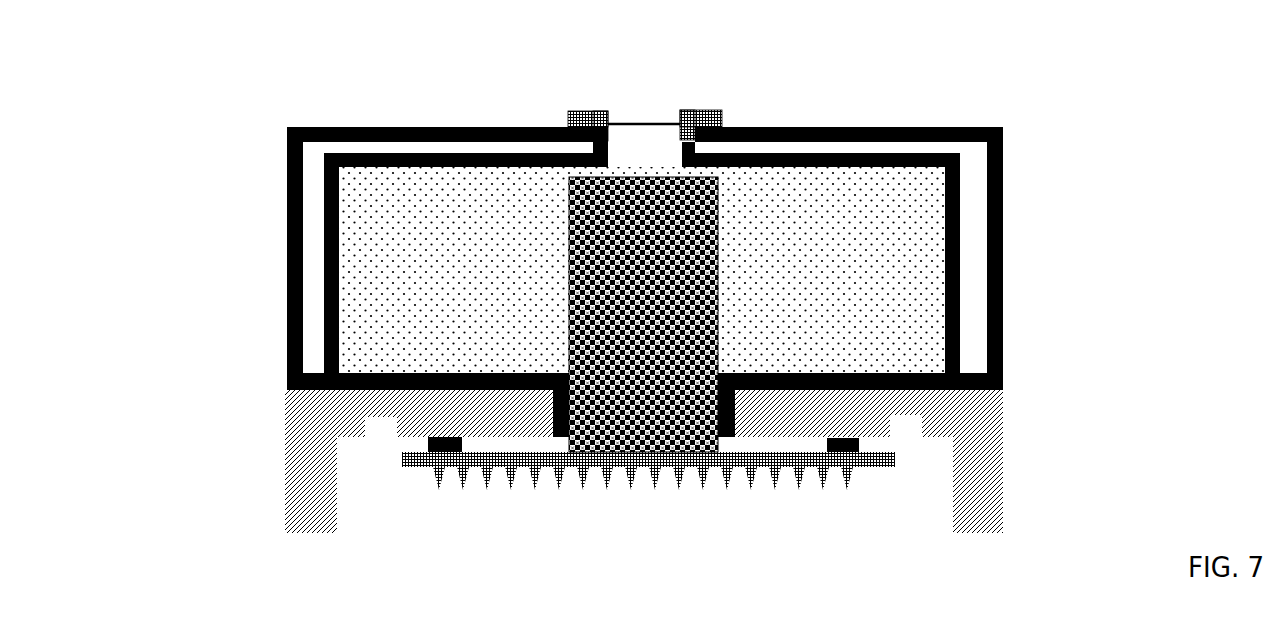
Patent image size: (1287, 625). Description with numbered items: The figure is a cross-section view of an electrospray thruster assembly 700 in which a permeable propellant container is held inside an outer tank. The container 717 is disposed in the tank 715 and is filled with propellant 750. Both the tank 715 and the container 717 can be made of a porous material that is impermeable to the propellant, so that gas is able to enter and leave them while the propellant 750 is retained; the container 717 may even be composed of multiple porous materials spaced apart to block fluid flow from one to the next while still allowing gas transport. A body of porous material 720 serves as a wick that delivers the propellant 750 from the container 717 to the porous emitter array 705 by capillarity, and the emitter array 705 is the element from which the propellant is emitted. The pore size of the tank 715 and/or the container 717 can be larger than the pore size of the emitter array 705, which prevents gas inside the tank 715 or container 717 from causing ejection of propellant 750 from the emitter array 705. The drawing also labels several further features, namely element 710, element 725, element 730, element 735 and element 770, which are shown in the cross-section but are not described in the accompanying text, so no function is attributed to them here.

The electrospray thruster assembly 700 is at (644, 356).
The porous emitter array 705 is at (538, 485).
The housing body 710 is at (643, 434).
The tank 715 is at (559, 224).
The container 717 is at (537, 239).
The porous material 720 is at (675, 314).
The dielectric fill 725 is at (642, 270).
The contact pads 730 is at (688, 447).
The terminal block 735 is at (764, 85).
The propellant 750 is at (847, 210).
The terminal block 770 is at (561, 93).